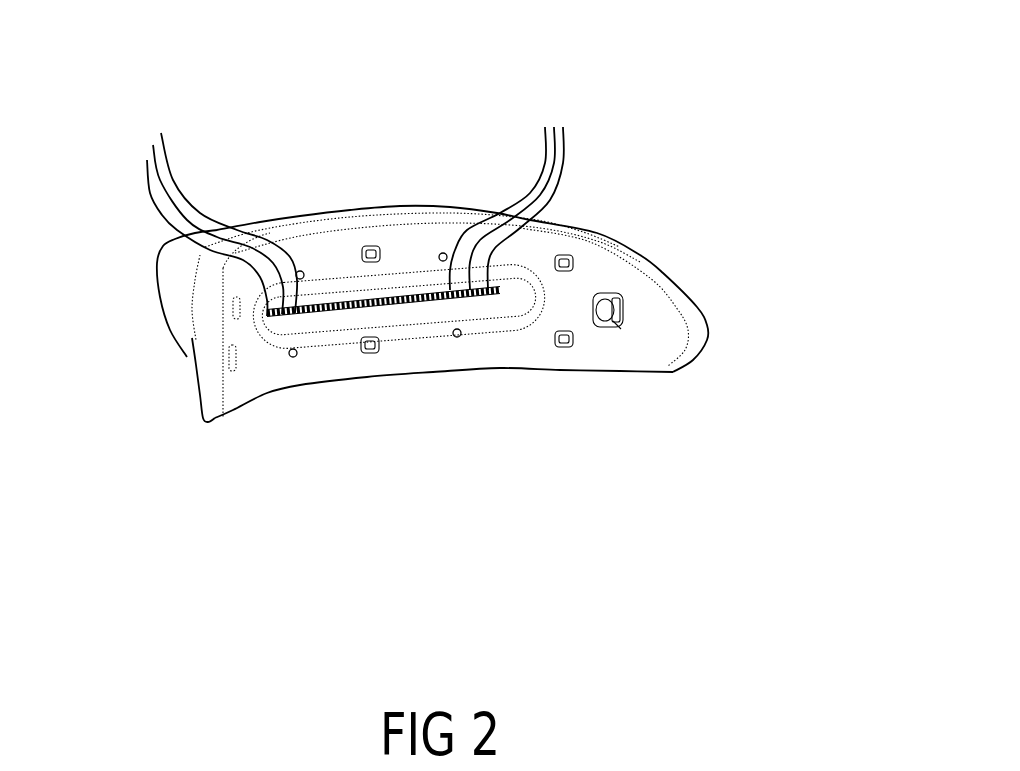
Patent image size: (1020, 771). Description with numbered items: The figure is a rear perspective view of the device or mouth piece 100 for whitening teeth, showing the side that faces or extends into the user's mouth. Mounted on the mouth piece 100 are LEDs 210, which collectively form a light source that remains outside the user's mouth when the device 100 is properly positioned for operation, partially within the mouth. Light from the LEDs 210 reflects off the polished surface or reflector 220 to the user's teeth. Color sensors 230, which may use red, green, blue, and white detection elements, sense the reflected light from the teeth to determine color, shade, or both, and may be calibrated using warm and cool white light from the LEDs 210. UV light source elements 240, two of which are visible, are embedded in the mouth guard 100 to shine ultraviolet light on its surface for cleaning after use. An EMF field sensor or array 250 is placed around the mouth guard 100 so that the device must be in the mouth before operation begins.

The device or mouth piece 100 is at (195, 54).
The LEDs 210 is at (343, 199).
The polished surface or reflector 220 is at (410, 317).
The color sensors 230 is at (371, 250).
The UV light source elements 240 is at (630, 310).
The EMF field sensor or array 250 is at (623, 330).